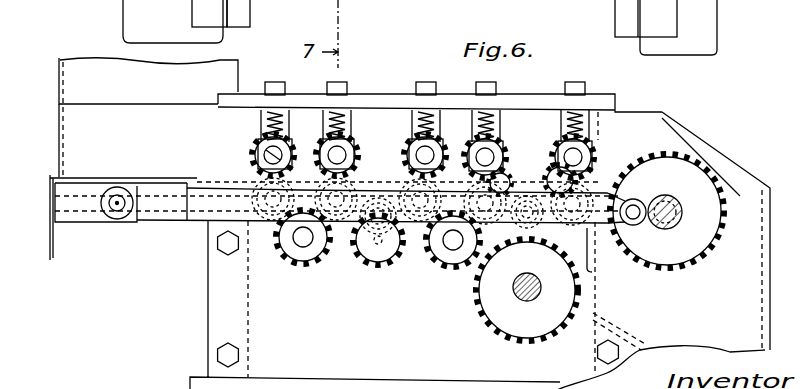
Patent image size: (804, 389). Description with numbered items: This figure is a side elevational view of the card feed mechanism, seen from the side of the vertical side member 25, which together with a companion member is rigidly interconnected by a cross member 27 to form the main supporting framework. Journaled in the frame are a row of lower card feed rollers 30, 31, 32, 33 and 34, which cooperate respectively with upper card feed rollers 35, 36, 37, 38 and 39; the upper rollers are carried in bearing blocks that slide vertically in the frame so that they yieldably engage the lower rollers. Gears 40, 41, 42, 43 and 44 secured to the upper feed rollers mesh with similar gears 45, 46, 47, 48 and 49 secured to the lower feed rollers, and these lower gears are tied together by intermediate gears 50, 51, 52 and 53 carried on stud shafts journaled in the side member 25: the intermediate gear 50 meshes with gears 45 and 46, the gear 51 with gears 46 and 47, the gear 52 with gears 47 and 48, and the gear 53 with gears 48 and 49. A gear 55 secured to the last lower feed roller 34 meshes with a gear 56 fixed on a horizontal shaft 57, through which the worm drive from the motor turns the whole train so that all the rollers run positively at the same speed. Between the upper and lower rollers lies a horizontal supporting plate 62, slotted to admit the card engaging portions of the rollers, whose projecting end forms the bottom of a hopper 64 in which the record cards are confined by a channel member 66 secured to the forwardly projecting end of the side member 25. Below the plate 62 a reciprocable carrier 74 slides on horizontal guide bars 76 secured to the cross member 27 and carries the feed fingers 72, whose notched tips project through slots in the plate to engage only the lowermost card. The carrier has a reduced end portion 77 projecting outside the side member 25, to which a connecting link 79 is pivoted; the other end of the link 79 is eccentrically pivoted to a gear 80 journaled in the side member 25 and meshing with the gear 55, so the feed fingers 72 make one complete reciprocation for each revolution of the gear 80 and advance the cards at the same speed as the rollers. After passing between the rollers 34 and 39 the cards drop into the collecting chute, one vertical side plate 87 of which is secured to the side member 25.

The vertical side member 25 is at (267, 323).
The cross member 27 is at (240, 305).
The lower card feed roller 30 is at (263, 224).
The lower card feed roller 31 is at (338, 226).
The lower card feed roller 32 is at (434, 245).
The lower card feed roller 33 is at (488, 186).
The lower card feed roller 34 is at (570, 184).
The upper card feed roller 35 is at (250, 152).
The upper card feed roller 36 is at (332, 153).
The upper card feed roller 37 is at (413, 153).
The upper card feed roller 38 is at (474, 156).
The upper card feed roller 39 is at (560, 146).
The gear 40 is at (262, 148).
The gear 41 is at (352, 150).
The gear 42 is at (400, 148).
The gear 43 is at (500, 152).
The gear 44 is at (592, 152).
The gear 45 is at (262, 185).
The gear 46 is at (340, 186).
The gear 47 is at (432, 190).
The gear 48 is at (527, 290).
The gear 49 is at (562, 193).
The intermediate gear 50 is at (302, 250).
The intermediate gear 51 is at (377, 240).
The intermediate gear 52 is at (448, 260).
The intermediate gear 53 is at (508, 243).
The gear 55 is at (590, 270).
The gear 56 is at (574, 290).
The horizontal shaft 57 is at (517, 296).
The horizontal supporting plate 62 is at (186, 205).
The hopper 64 is at (55, 95).
The channel member 66 is at (78, 75).
The feed finger 72 is at (52, 175).
The reciprocable carrier 74 is at (80, 222).
The horizontal guide bar 76 is at (80, 192).
The reduced end portion 77 is at (110, 224).
The connecting link 79 is at (157, 205).
The gear 80 is at (690, 257).
The vertical side plate 87 is at (740, 178).